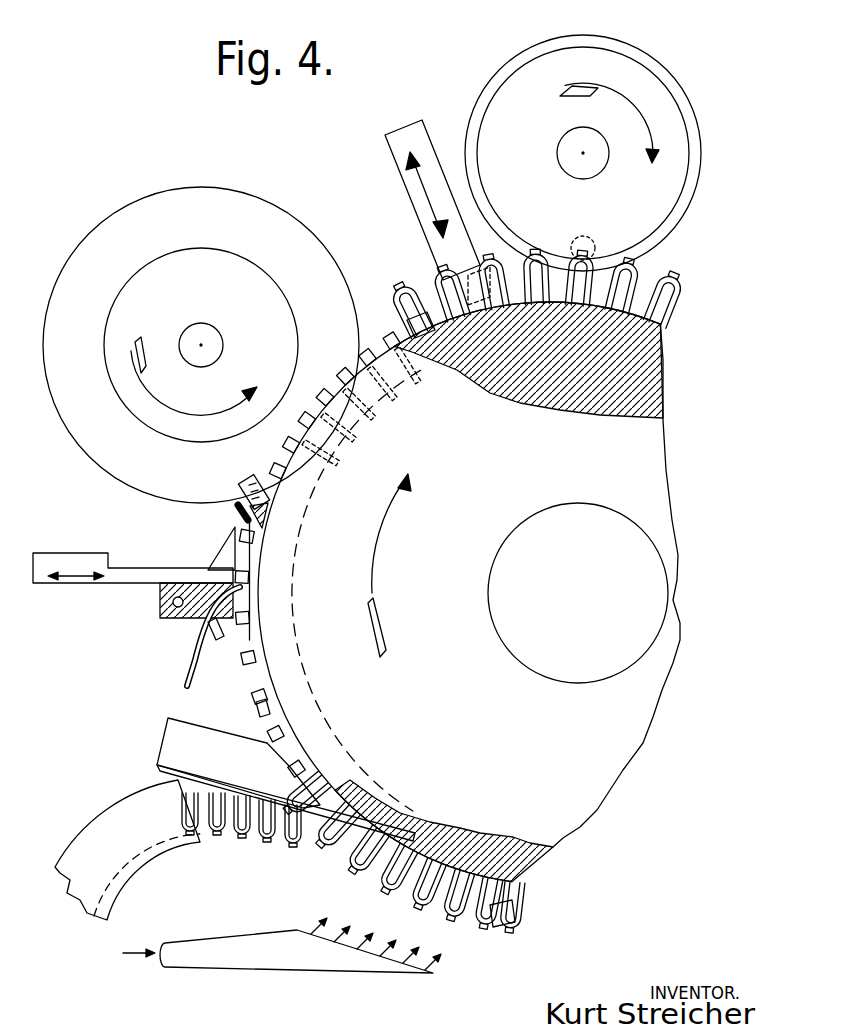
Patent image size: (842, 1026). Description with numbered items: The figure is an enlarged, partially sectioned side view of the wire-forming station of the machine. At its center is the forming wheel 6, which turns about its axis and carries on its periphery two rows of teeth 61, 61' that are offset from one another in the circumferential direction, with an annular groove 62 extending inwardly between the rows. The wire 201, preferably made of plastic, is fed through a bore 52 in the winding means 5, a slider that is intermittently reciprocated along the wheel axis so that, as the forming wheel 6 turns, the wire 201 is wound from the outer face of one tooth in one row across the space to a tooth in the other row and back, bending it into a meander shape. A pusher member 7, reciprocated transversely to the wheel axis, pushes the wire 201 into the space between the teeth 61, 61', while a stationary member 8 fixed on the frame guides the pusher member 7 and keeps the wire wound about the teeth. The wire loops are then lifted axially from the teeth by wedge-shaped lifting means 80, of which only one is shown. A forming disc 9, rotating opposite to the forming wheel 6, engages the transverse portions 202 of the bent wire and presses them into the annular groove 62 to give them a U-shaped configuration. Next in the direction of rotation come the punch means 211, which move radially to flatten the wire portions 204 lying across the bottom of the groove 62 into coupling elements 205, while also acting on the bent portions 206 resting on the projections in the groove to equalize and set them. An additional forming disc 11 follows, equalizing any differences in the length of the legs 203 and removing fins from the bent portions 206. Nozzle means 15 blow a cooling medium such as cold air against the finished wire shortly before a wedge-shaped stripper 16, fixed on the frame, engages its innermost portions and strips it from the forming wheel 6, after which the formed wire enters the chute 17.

The winding means 5 is at (160, 600).
The forming wheel 6 is at (670, 527).
The pusher member 7 is at (72, 556).
The stationary member 8 is at (228, 545).
The forming disc 9 is at (62, 404).
The additional forming disc 11 is at (686, 110).
The nozzle means 15 is at (233, 946).
The wedge-shaped stripper 16 is at (170, 737).
The chute 17 is at (112, 807).
The bore 52 is at (214, 636).
The row of teeth 61 is at (302, 554).
The row of teeth 61' is at (247, 710).
The annular groove 62 is at (498, 922).
The lifting means 80 is at (262, 507).
The wire 201 is at (190, 660).
The transverse portions 202 is at (232, 506).
The legs 203 is at (301, 838).
The wire portions 204 is at (372, 372).
The coupling elements 205 is at (270, 840).
The bent portions 206 is at (288, 846).
The punch means 211 is at (397, 158).